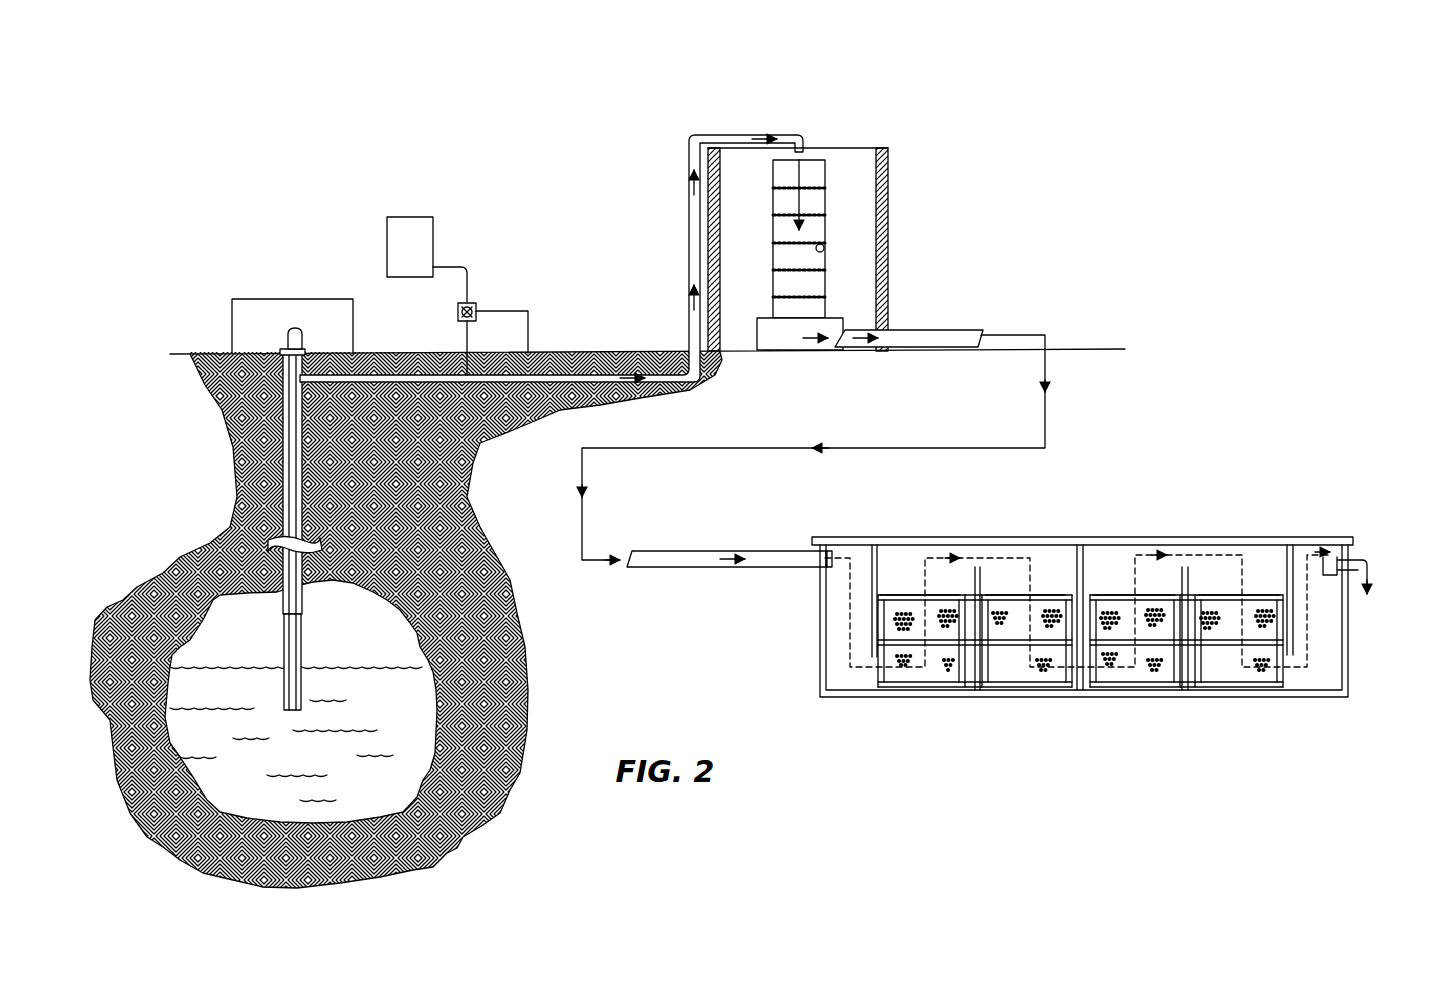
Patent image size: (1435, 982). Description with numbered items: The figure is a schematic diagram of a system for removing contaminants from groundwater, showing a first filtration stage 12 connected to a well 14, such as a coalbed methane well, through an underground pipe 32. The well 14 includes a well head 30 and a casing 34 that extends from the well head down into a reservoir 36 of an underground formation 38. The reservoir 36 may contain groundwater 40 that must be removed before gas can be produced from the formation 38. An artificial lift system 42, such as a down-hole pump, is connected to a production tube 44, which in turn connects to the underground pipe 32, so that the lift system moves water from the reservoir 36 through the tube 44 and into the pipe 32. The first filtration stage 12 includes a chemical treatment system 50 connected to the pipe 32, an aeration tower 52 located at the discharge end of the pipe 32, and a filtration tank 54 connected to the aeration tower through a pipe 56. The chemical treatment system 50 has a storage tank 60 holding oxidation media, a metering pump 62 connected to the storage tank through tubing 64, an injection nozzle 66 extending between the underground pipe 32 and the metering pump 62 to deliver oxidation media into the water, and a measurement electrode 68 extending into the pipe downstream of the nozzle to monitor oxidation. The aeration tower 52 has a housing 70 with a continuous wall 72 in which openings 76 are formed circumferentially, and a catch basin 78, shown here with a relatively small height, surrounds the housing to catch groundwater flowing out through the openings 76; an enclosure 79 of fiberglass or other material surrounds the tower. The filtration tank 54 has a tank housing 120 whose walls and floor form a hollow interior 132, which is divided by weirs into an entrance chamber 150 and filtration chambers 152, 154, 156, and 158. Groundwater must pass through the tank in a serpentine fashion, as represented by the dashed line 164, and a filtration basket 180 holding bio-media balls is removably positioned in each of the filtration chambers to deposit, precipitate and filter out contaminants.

The first filtration stage 12 is at (1084, 204).
The well 14 is at (272, 293).
The well head 30 is at (232, 326).
The underground pipe 32 is at (357, 406).
The casing 34 is at (236, 431).
The reservoir 36 is at (336, 606).
The underground formation 38 is at (410, 626).
The groundwater 40 is at (421, 696).
The artificial lift system 42 is at (295, 662).
The production tube 44 is at (289, 514).
The chemical treatment system 50 is at (441, 269).
The aeration tower 52 is at (845, 236).
The filtration tank 54 is at (1024, 605).
The pipe 56 is at (952, 329).
The storage tank 60 is at (387, 246).
The metering pump 62 is at (478, 303).
The tubing 64 is at (468, 263).
The injection nozzle 66 is at (464, 346).
The measurement electrode 68 is at (538, 353).
The housing 70 is at (827, 170).
The continuous wall 72 is at (828, 232).
The openings 76 is at (824, 249).
The catch basin 78 is at (788, 346).
The enclosure 79 is at (897, 270).
The tank housing 120 is at (818, 660).
The hollow interior 132 is at (1320, 594).
The entrance chamber 150 is at (860, 576).
The filtration chamber 152 is at (942, 576).
The filtration chamber 154 is at (1046, 576).
The filtration chamber 156 is at (1120, 576).
The filtration chamber 158 is at (1258, 576).
The dashed line 164 is at (1198, 553).
The filtration basket 180 is at (904, 657).